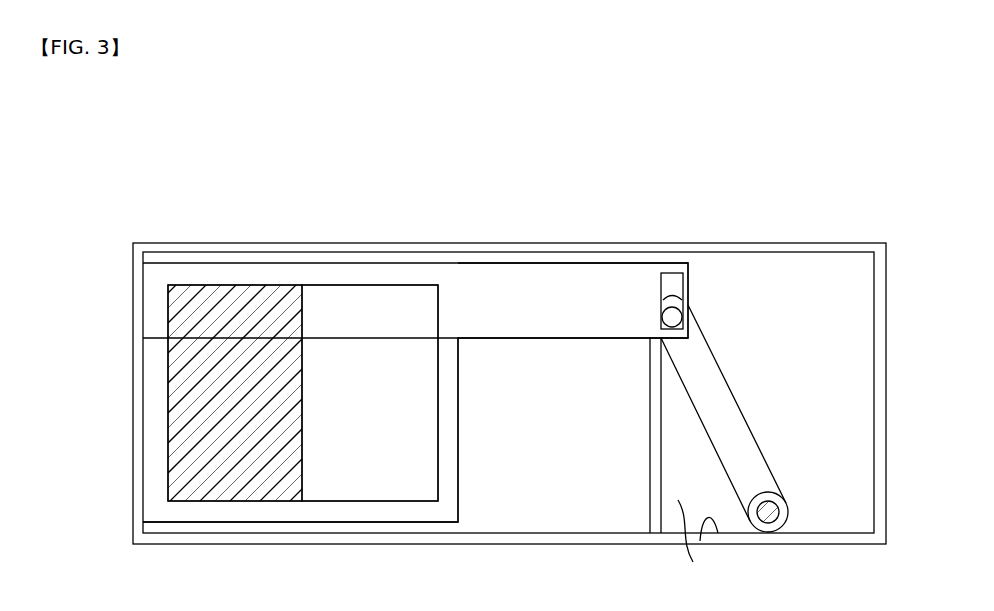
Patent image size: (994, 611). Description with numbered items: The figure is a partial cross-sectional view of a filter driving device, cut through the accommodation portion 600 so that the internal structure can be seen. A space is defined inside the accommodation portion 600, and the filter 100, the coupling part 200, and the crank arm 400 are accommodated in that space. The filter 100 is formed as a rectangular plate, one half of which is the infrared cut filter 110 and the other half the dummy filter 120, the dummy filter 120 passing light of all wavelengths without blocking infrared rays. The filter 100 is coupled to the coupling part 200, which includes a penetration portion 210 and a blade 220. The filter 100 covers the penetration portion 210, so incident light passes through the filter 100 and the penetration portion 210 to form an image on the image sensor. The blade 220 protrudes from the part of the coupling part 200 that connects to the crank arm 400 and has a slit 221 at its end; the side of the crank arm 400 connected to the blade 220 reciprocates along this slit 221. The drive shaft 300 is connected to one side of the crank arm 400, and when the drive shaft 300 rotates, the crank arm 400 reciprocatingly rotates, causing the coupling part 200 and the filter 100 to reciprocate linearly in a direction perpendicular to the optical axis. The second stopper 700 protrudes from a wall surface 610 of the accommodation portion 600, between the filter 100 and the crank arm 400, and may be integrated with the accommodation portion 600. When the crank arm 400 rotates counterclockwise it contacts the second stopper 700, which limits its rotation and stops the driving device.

The filter 100 is at (373, 181).
The infrared cut filter 110 is at (252, 302).
The dummy filter 120 is at (373, 303).
The coupling part 200 is at (682, 181).
The penetration portion 210 is at (410, 305).
The blade 220 is at (577, 303).
The slit 221 is at (681, 297).
The drive shaft 300 is at (768, 523).
The crank arm 400 is at (720, 403).
The accommodation portion 600 is at (172, 200).
The wall surface 610 is at (697, 547).
The second stopper 700 is at (655, 510).